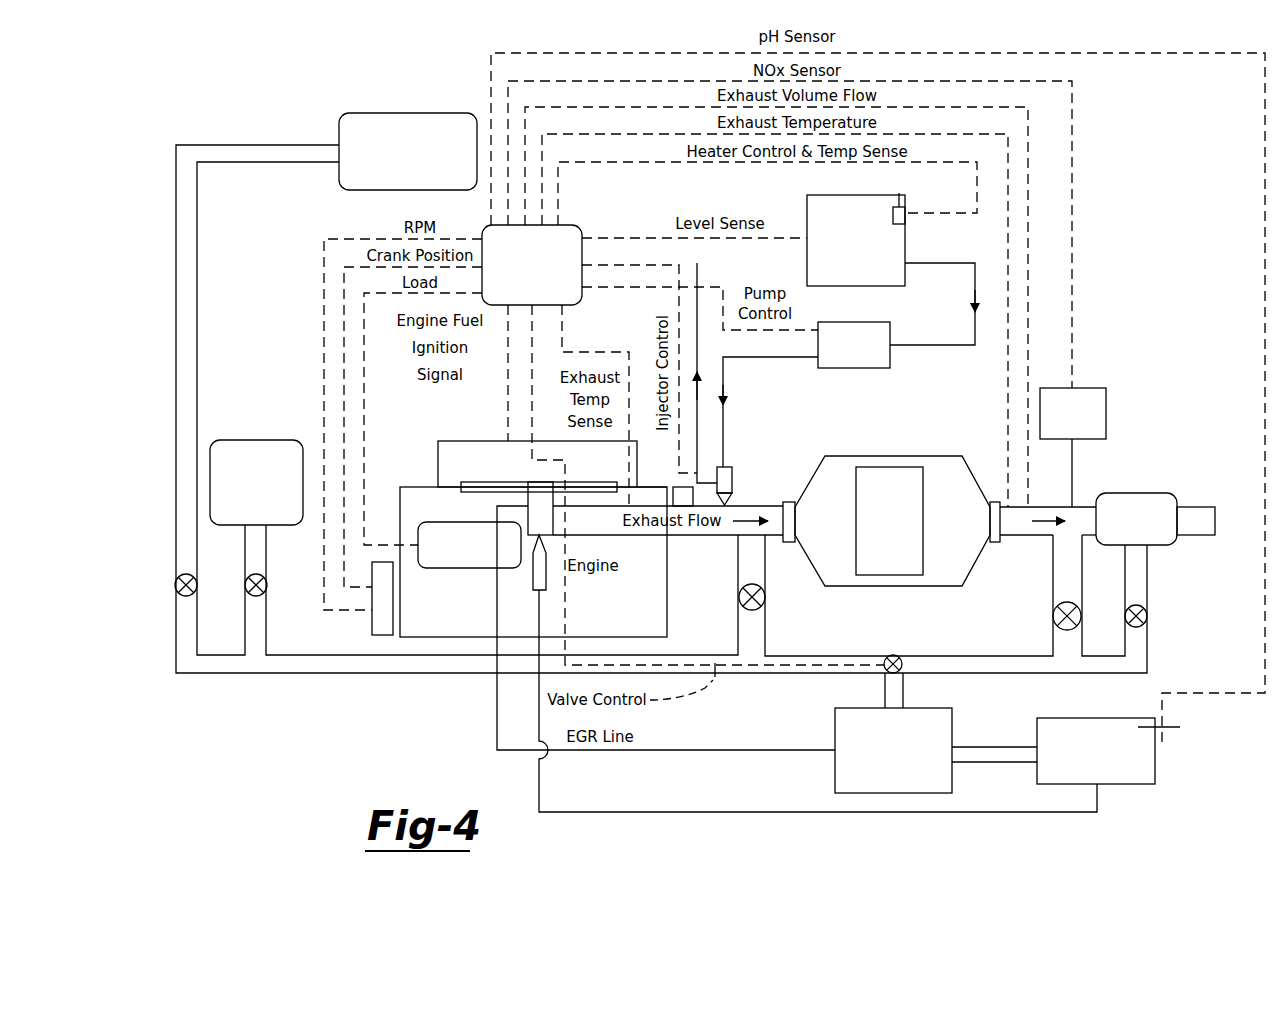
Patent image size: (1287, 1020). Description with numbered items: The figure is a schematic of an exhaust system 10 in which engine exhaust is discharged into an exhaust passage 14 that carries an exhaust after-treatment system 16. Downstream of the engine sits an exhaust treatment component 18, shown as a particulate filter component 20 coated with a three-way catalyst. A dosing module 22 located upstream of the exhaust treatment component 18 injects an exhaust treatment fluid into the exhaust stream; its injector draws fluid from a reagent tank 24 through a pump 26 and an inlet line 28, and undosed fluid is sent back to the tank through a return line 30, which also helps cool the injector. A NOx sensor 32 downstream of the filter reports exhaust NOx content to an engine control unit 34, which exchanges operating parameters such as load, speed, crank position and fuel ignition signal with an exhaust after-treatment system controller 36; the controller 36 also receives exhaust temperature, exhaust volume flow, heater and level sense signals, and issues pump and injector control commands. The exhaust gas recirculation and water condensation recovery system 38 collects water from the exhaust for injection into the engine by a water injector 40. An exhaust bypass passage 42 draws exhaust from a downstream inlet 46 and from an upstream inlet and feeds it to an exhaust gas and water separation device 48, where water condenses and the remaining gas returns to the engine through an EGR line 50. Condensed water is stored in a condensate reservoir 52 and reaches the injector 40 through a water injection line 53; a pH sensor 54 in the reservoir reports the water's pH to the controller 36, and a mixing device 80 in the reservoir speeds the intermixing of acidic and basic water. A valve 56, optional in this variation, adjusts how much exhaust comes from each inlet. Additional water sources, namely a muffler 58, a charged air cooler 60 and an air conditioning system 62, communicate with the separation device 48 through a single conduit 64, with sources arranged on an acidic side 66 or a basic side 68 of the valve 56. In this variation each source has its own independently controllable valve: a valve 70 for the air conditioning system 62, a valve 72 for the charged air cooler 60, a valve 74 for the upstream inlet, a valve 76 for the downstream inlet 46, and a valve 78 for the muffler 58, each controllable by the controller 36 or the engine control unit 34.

The exhaust system 10 is at (438, 46).
The exhaust passage 14 is at (688, 535).
The exhaust after-treatment system 16 is at (988, 572).
The exhaust treatment component 18 is at (942, 456).
The particulate filter component 20 is at (893, 467).
The dosing module 22 is at (732, 478).
The reagent tank 24 is at (905, 250).
The pump 26 is at (853, 368).
The inlet line 28 is at (723, 385).
The return line 30 is at (780, 263).
The NOx sensor 32 is at (1083, 388).
The engine control unit 34 is at (458, 568).
The exhaust after-treatment system controller 36 is at (562, 225).
The exhaust gas recirculation and water condensation recovery system 38 is at (970, 731).
The water injector 40 is at (899, 193).
The exhaust bypass passage 42 is at (975, 640).
The downstream inlet 46 is at (1082, 580).
The exhaust gas and water separation device 48 is at (835, 740).
The EGR line 50 is at (497, 735).
The condensate reservoir 52 is at (1133, 784).
The water injection line 53 is at (743, 812).
The pH sensor 54 is at (1160, 748).
The valve 56 is at (893, 655).
The muffler 58 is at (1135, 493).
The charged air cooler 60 is at (255, 440).
The air conditioning system 62 is at (368, 113).
The single conduit 64 is at (281, 673).
The acidic side 66 is at (411, 747).
The basic side 68 is at (1178, 620).
The valve 70 is at (176, 589).
The valve 72 is at (266, 590).
The valve 74 is at (765, 597).
The valve 76 is at (1053, 612).
The valve 78 is at (1147, 612).
The mixing device 80 is at (1073, 775).